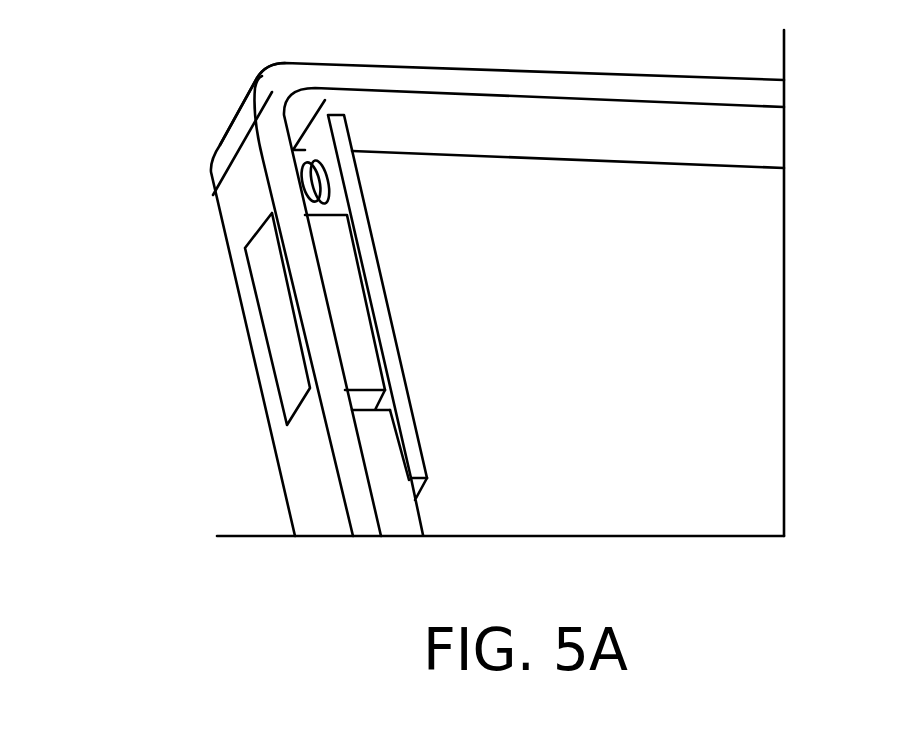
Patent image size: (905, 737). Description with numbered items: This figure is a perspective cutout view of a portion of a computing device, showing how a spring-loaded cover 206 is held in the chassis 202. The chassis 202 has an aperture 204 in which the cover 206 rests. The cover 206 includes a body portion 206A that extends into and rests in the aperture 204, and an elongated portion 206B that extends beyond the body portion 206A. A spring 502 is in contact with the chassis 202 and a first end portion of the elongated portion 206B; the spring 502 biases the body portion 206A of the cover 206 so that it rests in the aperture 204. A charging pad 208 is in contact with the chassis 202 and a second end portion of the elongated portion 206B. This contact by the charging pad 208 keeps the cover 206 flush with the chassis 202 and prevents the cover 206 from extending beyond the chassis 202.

The chassis 202 is at (577, 82).
The spring 502 is at (262, 78).
The aperture 204 is at (268, 293).
The cover 206 is at (349, 361).
The body portion 206A is at (335, 282).
The elongated portion 206B is at (410, 438).
The charging pad 208 is at (392, 513).